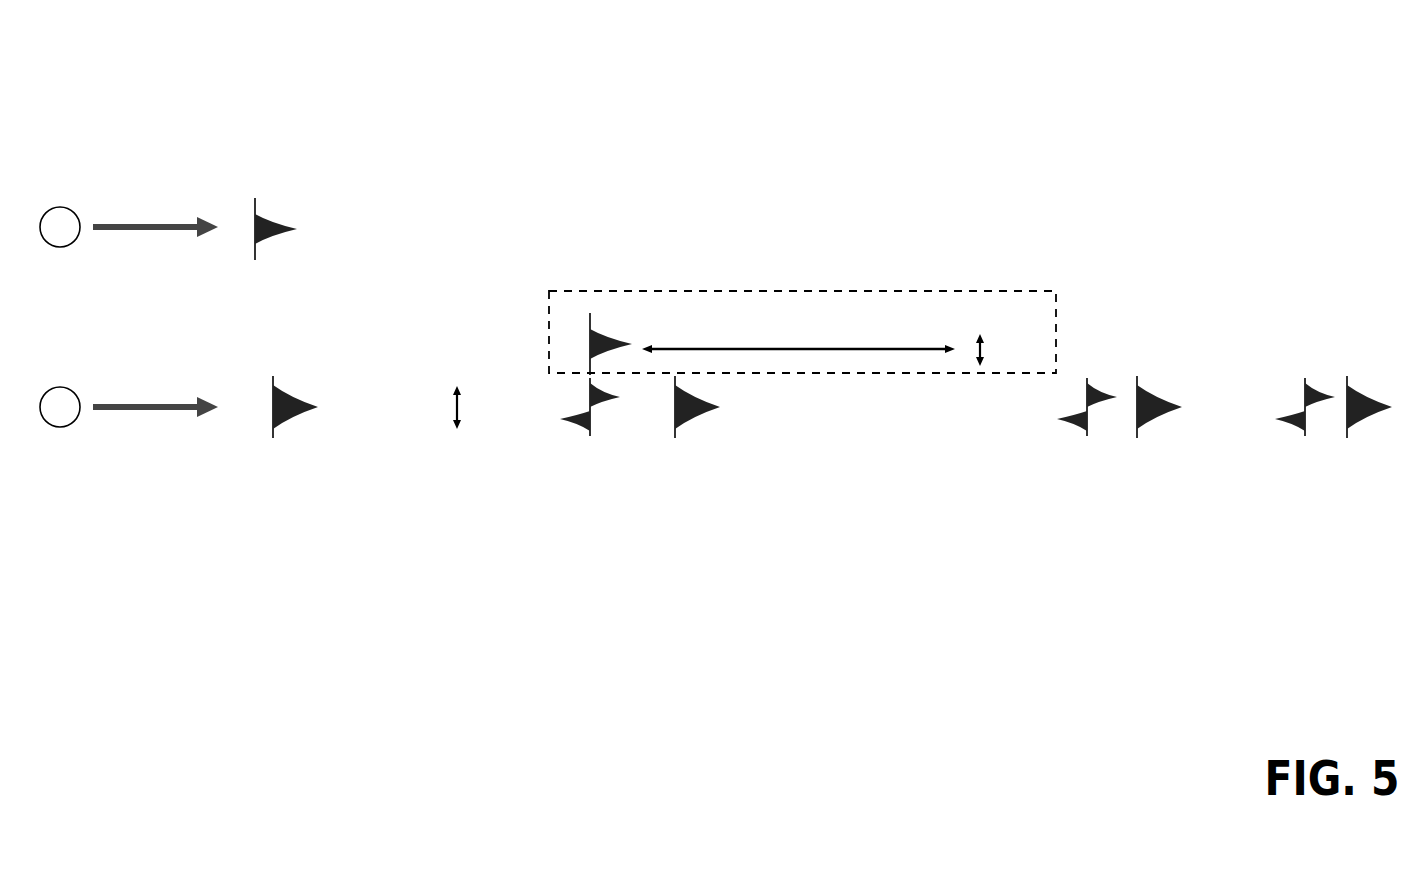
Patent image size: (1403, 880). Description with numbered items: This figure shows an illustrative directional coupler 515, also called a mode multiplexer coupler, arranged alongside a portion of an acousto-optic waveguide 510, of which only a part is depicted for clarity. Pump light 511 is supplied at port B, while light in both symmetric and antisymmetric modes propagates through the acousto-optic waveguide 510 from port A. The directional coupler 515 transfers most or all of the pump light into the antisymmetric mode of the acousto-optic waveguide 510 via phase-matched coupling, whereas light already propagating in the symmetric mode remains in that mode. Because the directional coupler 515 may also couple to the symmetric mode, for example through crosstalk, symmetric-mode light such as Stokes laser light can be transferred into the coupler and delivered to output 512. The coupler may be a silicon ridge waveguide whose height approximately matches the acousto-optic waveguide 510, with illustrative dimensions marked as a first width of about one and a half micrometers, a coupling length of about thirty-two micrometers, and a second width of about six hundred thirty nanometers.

The acousto-optic waveguide 510 is at (412, 420).
The pump light 511 is at (300, 236).
The output 512 is at (1195, 235).
The directional coupler 515 is at (844, 291).